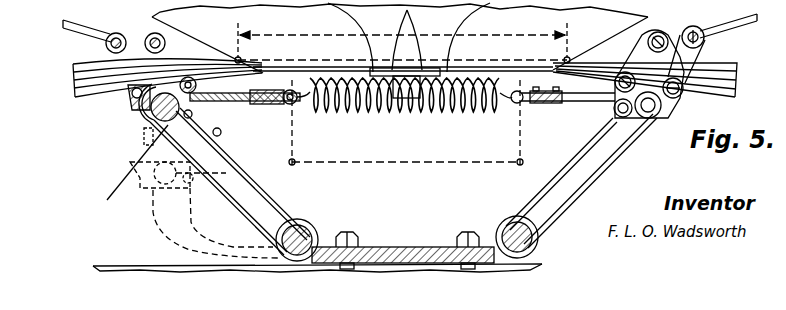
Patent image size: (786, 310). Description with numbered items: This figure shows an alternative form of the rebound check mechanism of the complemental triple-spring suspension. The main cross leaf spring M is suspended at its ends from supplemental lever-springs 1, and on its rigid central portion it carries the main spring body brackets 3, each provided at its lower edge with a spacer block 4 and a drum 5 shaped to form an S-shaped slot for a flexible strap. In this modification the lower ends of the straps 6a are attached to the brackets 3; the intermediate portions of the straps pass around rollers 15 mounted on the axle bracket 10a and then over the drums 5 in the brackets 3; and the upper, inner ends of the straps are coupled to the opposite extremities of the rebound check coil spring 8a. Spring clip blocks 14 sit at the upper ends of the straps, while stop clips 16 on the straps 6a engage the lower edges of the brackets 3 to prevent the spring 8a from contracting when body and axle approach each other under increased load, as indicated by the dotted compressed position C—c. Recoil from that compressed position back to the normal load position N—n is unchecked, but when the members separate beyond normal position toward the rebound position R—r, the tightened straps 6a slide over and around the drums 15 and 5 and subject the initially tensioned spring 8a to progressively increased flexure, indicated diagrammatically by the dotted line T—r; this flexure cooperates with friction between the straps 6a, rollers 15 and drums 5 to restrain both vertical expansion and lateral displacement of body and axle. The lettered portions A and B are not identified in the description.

The supplemental lever-spring 1 is at (91, 31).
The main spring body bracket 3 is at (148, 35).
The spacer block 4 is at (140, 108).
The drum 5 is at (148, 123).
The spring clip block 14 is at (273, 103).
The rebound check coil spring 8a is at (352, 113).
The stop clip 16 is at (150, 200).
The strap 6a is at (290, 206).
The roller 15 is at (311, 228).
The axle bracket 10a is at (410, 247).
The ground A is at (535, 261).
The body cover B is at (400, 50).
The main cross leaf spring M is at (80, 80).
The normal load position n is at (130, 107).
The rebound check spring flexure indication T is at (402, 40).
The rebound position r is at (403, 53).
The compressed position c is at (349, 169).